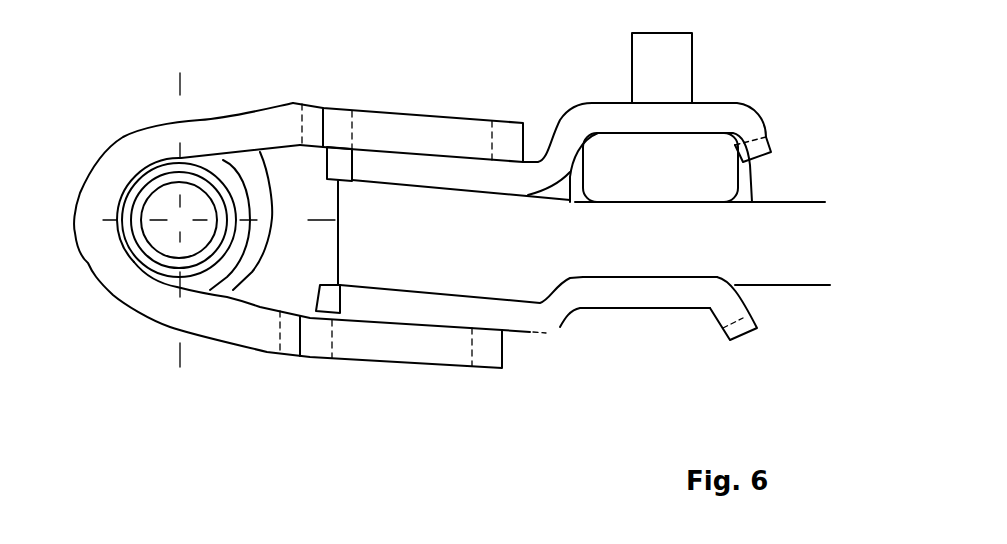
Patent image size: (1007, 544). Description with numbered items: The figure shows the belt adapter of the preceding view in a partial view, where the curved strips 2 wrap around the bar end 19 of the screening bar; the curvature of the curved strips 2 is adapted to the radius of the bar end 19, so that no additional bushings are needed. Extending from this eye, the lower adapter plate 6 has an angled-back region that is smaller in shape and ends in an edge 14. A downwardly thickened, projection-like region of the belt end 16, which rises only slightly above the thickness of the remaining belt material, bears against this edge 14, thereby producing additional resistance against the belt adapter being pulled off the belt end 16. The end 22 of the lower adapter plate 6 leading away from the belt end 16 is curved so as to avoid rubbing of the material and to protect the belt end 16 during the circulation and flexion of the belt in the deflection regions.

The curved strips 2 is at (135, 289).
The bar end 19 is at (155, 238).
The belt end 16 is at (459, 257).
The lower adapter plate 6 is at (512, 320).
The edge 14 is at (560, 327).
The end 22 is at (728, 310).